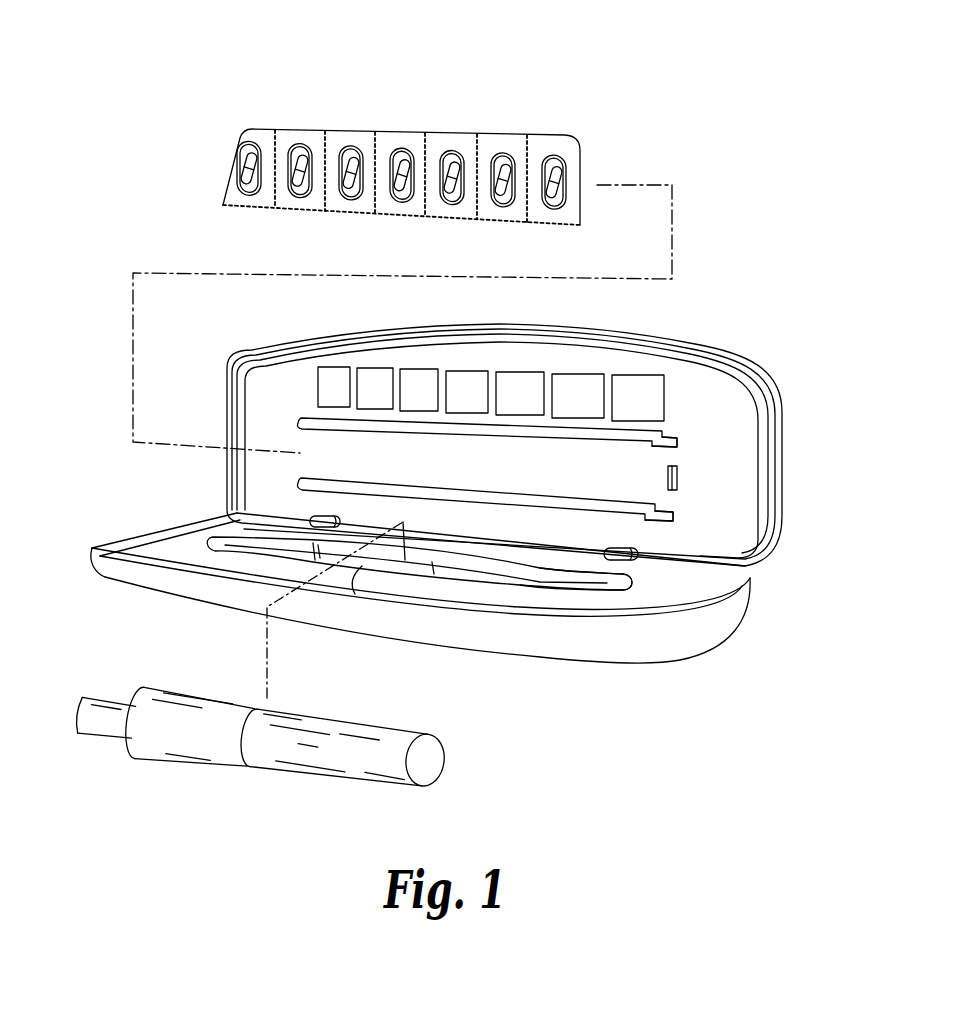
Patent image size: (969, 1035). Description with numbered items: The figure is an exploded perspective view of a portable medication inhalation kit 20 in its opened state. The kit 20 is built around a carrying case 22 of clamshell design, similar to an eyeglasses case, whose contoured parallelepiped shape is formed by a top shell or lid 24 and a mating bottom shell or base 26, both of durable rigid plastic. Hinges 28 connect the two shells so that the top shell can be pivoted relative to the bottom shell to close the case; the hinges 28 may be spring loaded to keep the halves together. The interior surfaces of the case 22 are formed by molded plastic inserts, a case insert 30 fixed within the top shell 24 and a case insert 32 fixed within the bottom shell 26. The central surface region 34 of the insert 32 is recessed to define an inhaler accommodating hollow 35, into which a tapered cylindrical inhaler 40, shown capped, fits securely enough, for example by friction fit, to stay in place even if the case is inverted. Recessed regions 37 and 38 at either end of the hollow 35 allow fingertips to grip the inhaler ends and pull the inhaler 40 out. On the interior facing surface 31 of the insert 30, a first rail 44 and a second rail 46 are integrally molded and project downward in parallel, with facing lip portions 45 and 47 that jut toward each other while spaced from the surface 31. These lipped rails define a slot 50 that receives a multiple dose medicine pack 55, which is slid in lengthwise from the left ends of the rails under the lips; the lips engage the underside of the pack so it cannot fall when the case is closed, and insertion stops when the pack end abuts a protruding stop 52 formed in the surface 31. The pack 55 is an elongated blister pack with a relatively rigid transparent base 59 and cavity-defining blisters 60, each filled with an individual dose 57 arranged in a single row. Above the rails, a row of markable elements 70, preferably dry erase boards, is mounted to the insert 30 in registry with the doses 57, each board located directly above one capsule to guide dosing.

The portable medication inhalation kit 20 is at (742, 109).
The carrying case 22 is at (757, 606).
The top shell or lid 24 is at (683, 341).
The bottom shell or base 26 is at (532, 643).
The hinges 28 is at (318, 517).
The case insert 30 is at (252, 378).
The interior facing surface 31 is at (280, 407).
The case insert 32 is at (152, 533).
The central surface region 34 is at (318, 596).
The inhaler accommodating hollow 35 is at (476, 573).
The recessed region 37 is at (240, 540).
The recessed region 38 is at (618, 582).
The inhaler 40 is at (251, 782).
The first rail 44 is at (668, 436).
The lip portion 45 is at (402, 437).
The second rail 46 is at (672, 518).
The lip portion 47 is at (480, 490).
The slot 50 is at (618, 478).
The protruding stop 52 is at (680, 480).
The multiple dose medicine pack 55 is at (437, 98).
The individual dose 57 is at (347, 158).
The base 59 is at (224, 192).
The blisters 60 is at (363, 152).
The markable elements 70 is at (637, 393).